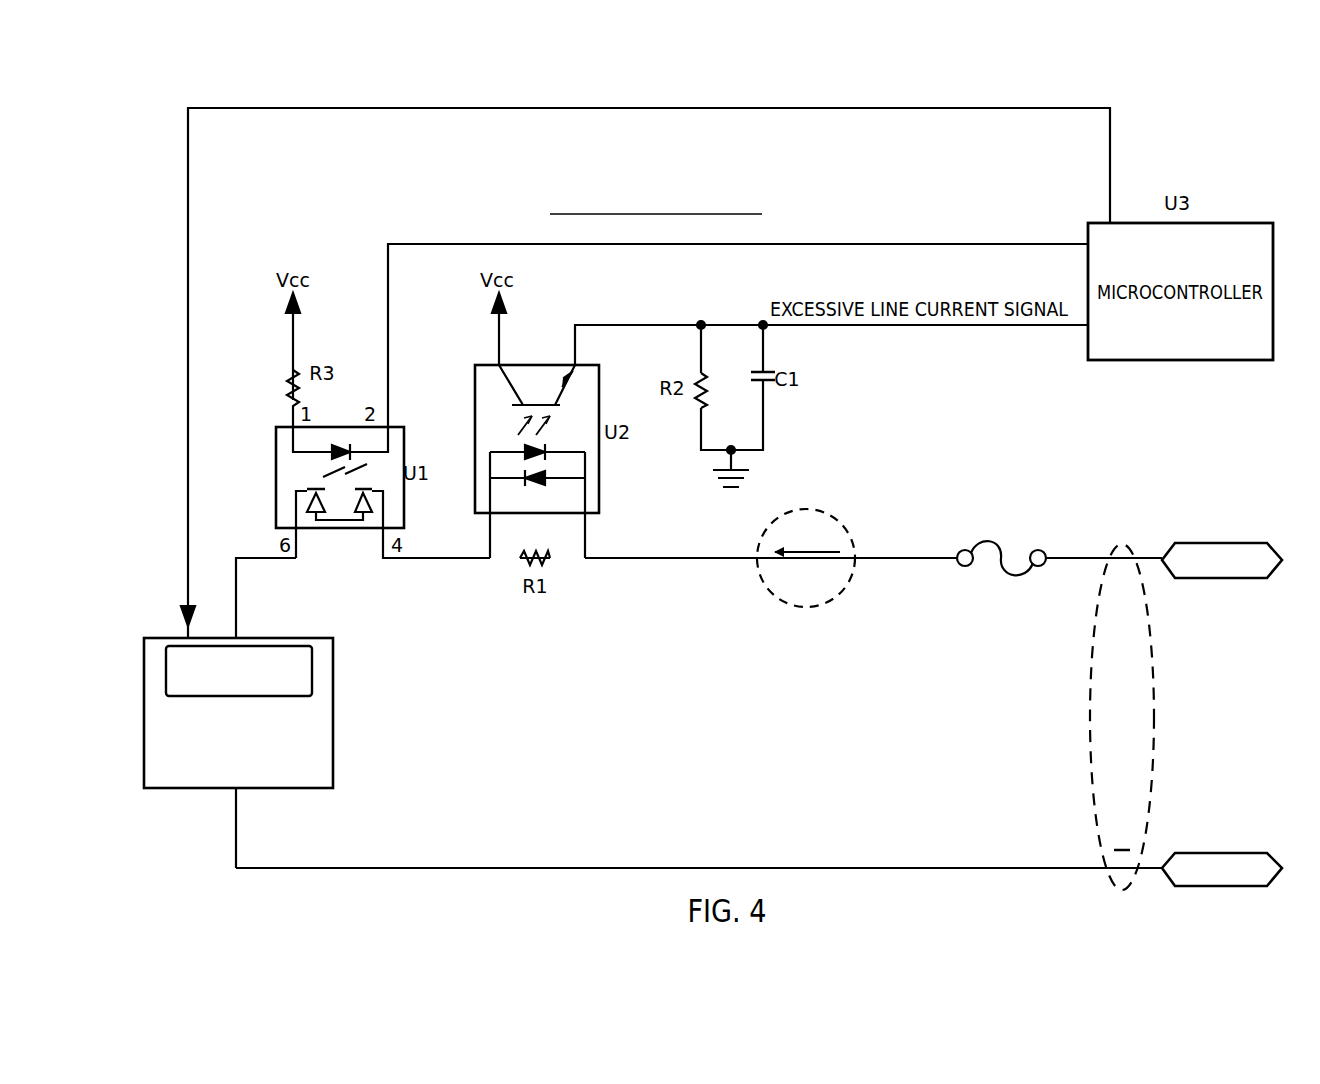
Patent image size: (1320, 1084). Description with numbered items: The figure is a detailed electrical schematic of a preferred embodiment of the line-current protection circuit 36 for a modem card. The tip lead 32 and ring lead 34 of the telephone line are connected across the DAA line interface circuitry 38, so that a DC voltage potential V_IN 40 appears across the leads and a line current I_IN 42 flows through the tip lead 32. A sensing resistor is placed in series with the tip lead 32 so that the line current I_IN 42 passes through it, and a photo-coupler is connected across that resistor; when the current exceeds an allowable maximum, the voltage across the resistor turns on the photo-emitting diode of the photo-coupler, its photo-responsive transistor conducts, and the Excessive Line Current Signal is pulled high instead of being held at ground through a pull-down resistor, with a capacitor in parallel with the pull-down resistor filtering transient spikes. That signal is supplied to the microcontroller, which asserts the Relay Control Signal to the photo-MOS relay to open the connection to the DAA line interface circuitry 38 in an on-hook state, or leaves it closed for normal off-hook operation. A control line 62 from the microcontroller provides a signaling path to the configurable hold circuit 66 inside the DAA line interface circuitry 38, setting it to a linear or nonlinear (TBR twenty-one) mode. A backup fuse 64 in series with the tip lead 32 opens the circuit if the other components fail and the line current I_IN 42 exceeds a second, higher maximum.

The tip lead 32 is at (1257, 555).
The ring lead 34 is at (1257, 862).
The protection circuit 36 is at (871, 232).
The DAA line interface circuitry 38 is at (315, 732).
The DC voltage potential V_IN 40 is at (1090, 730).
The line current I_IN 42 is at (845, 523).
The configuration path or control line 62 is at (188, 360).
The fuse 64 is at (997, 570).
The configurable hold circuit 66 is at (166, 673).